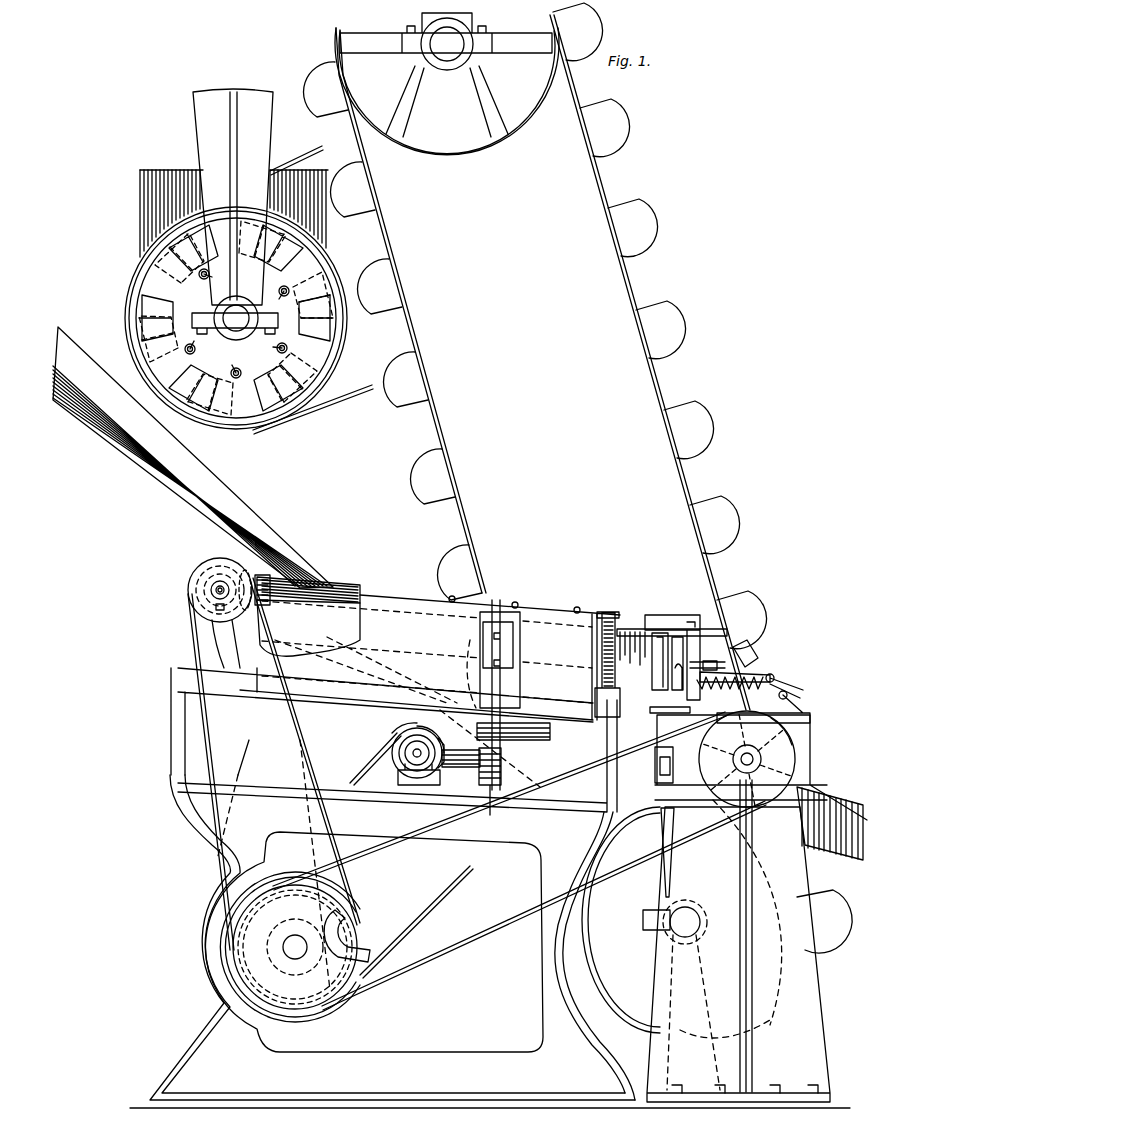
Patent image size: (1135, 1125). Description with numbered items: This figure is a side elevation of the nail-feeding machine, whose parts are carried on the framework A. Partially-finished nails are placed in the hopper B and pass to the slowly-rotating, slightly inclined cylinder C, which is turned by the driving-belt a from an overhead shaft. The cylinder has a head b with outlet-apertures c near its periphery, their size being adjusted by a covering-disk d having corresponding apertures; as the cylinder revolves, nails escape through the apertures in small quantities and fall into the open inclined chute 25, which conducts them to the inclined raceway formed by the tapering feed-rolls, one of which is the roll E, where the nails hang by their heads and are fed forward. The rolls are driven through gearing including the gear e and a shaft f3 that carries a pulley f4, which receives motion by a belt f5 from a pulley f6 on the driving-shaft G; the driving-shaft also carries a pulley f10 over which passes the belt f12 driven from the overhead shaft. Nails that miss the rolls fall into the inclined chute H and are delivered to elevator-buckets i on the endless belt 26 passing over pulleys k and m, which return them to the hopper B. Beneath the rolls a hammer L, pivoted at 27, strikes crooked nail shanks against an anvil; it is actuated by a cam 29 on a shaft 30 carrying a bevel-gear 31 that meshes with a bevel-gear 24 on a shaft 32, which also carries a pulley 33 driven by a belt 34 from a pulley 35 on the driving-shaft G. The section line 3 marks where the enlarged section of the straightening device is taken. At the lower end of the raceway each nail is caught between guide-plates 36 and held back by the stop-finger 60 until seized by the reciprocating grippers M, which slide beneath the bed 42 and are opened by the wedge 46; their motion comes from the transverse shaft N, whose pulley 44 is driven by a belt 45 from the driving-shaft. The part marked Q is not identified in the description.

The pulley m is at (345, 92).
The endless belt 26 is at (410, 332).
The elevator-buckets i is at (845, 908).
The hopper B is at (140, 205).
The cylinder C is at (128, 308).
The head b is at (147, 325).
The outlet-apertures c is at (150, 300).
The covering-disk d is at (224, 323).
The driving-belt a is at (313, 409).
The inclined chute 25 is at (193, 457).
The feed-roll E is at (350, 597).
The pulley f4 is at (190, 583).
The gear e is at (254, 584).
The belt f5 is at (218, 591).
The shaft f3 is at (195, 630).
The inclined chute H is at (519, 764).
The framework A is at (490, 941).
The pulley k is at (583, 917).
The lever Q is at (664, 832).
The driving-shaft G is at (292, 947).
The pulley f6 is at (233, 940).
The pulley f10 is at (222, 975).
The belt f12 is at (482, 886).
The pulley 35 is at (352, 925).
The shaft 32 is at (414, 753).
The bevel-gear 24 is at (408, 738).
The pulley 33 is at (410, 726).
The bevel-gear 31 is at (440, 735).
The belt 34 is at (367, 763).
The cam 29 is at (486, 748).
The shaft 30 is at (503, 760).
The pivot 27 is at (478, 727).
The section line 3 is at (500, 612).
The hammer L is at (512, 698).
The guide-plates 36 is at (609, 612).
The stop-finger 60 is at (672, 612).
The grippers M is at (730, 630).
The wedge 46 is at (758, 648).
The bed 42 is at (808, 716).
The belt 45 is at (657, 745).
The transverse shaft N is at (762, 760).
The pulley 44 is at (793, 745).